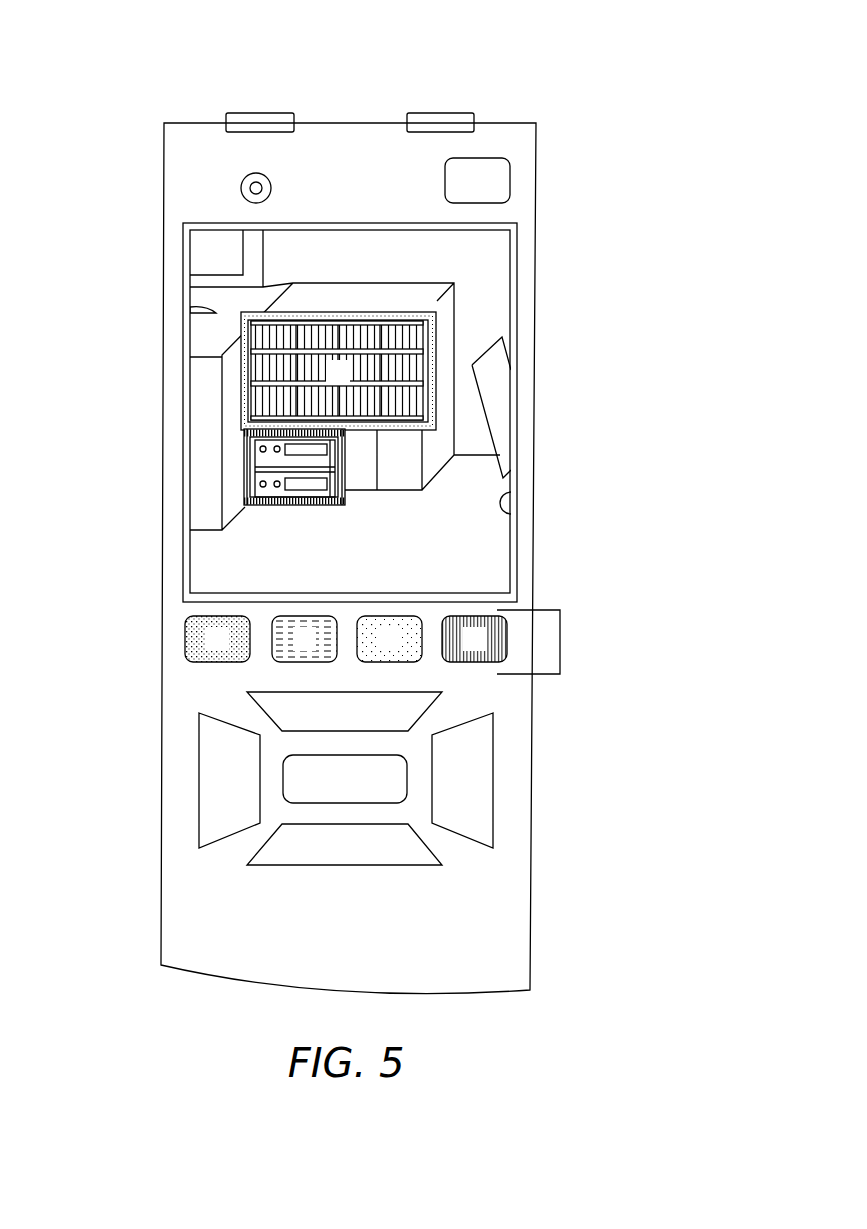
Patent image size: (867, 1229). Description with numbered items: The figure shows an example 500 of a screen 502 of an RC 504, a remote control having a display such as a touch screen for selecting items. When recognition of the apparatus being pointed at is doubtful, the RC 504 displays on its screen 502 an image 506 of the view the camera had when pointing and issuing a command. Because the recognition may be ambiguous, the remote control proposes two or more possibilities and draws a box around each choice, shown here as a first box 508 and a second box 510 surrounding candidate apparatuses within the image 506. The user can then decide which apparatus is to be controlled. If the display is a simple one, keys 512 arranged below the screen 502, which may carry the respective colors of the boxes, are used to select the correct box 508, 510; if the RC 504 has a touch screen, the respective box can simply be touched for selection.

The example 500 is at (360, 38).
The screen 502 is at (183, 443).
The RC 504 is at (533, 793).
The image 506 is at (478, 272).
The box 508 is at (443, 388).
The box 510 is at (345, 491).
The keys 512 is at (560, 642).